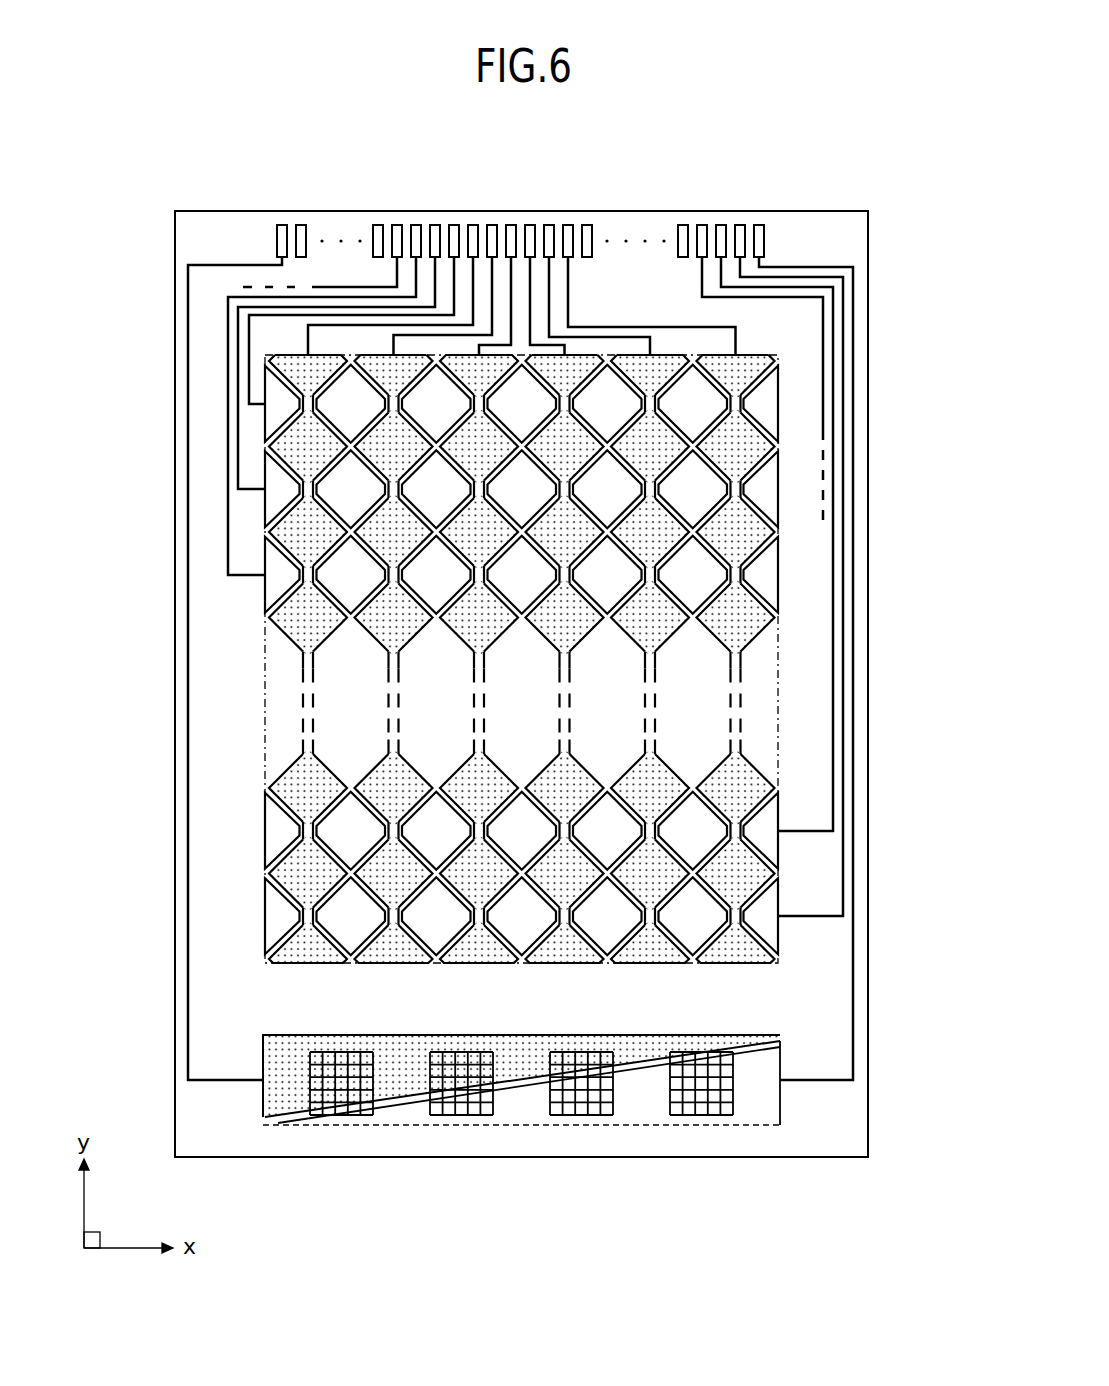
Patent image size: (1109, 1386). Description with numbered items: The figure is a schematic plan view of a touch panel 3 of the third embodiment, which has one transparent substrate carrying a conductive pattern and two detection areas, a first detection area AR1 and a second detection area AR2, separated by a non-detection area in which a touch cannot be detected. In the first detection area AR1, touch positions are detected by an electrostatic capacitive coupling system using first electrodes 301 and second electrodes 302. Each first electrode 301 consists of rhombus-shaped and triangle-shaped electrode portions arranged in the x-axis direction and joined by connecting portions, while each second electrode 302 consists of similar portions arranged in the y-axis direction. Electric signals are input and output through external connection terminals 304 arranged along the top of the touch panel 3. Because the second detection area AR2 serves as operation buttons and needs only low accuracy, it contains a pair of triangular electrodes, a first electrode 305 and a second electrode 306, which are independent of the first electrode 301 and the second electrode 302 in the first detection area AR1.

The touch panel 3 is at (875, 250).
The first electrode 301 is at (762, 404).
The second electrode 302 is at (305, 533).
The external connection terminal 304 is at (282, 225).
The first electrode (triangular electrode) 305 is at (645, 1097).
The second electrode (triangular electrode) 306 is at (397, 1070).
The first detection area AR1 is at (257, 727).
The second detection area AR2 is at (327, 1130).